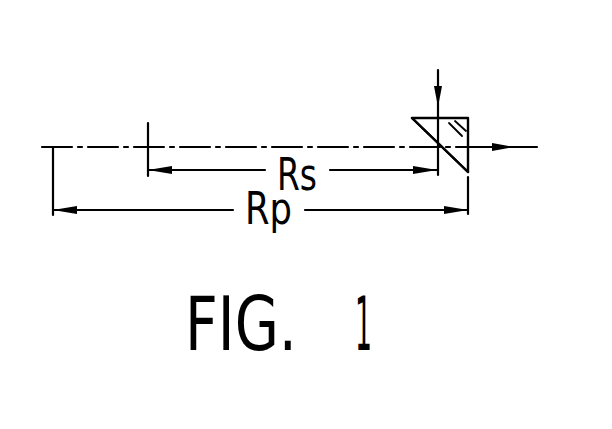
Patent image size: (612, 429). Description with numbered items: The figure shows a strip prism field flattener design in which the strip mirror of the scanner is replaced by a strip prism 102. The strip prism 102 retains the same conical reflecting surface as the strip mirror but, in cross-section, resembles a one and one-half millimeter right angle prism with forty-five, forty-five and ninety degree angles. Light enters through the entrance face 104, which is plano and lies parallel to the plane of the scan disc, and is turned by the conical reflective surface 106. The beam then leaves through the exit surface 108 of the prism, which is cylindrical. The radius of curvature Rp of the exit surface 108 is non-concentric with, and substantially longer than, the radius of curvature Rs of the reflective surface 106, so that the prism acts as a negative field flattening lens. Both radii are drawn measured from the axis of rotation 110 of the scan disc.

The strip prism 102 is at (419, 107).
The entrance face 104 is at (452, 118).
The reflective surface 106 is at (413, 118).
The exit surface 108 is at (472, 157).
The axis of rotation 110 is at (148, 125).